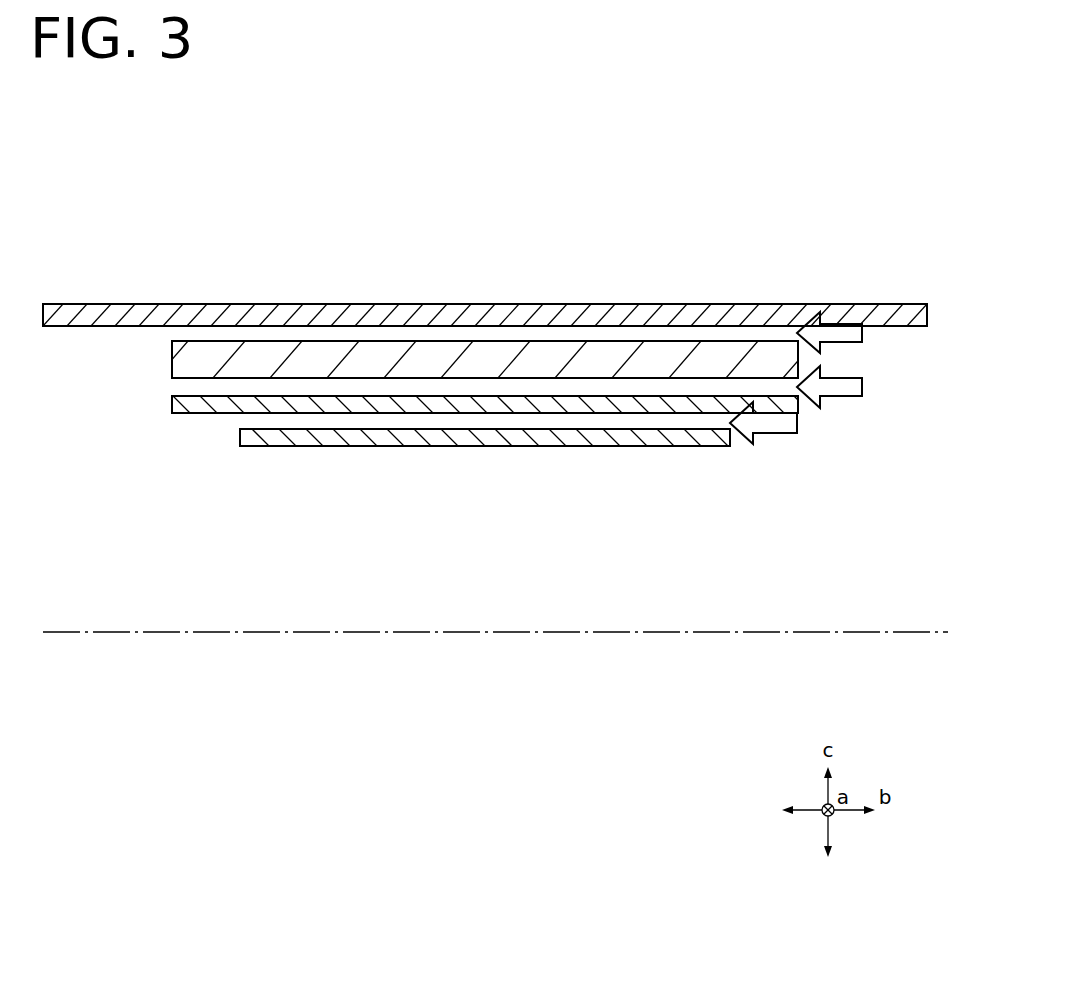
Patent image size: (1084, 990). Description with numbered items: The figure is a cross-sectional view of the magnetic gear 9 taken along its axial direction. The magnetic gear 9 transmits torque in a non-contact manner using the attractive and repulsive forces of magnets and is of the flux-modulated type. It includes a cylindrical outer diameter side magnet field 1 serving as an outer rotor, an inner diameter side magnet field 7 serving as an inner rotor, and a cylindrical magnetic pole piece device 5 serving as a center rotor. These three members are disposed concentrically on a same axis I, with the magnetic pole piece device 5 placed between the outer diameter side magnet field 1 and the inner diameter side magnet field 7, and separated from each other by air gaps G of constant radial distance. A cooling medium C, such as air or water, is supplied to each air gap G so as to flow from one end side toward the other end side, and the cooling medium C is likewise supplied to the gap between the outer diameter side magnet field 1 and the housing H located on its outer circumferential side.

The housing H is at (748, 318).
The magnetic gear 9 is at (519, 274).
The outer diameter side magnet field 1 is at (498, 357).
The magnetic pole piece device 5 is at (552, 403).
The inner diameter side magnet field 7 is at (598, 437).
The air gap G is at (317, 422).
The cooling medium C is at (809, 378).
The axis I is at (786, 636).